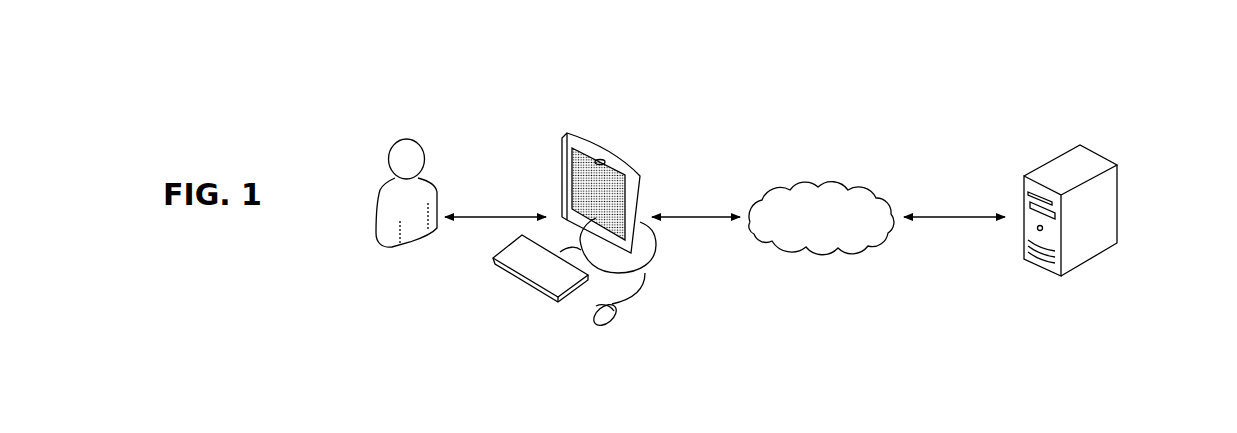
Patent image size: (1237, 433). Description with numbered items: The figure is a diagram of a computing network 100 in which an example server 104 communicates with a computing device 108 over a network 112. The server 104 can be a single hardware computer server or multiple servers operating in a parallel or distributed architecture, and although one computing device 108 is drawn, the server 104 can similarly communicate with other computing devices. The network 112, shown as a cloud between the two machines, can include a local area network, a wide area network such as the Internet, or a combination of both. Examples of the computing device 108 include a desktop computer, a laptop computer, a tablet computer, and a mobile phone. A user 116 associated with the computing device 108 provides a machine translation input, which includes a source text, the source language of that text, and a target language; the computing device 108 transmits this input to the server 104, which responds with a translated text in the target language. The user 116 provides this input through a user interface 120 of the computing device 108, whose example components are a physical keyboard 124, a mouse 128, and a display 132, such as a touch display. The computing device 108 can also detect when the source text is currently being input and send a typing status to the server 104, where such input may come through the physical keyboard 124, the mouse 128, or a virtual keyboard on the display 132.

The computing network 100 is at (956, 60).
The server 104 is at (1099, 158).
The computing device 108 is at (629, 189).
The network 112 is at (823, 188).
The user 116 is at (405, 140).
The user interface 120 is at (583, 235).
The physical keyboard 124 is at (517, 283).
The mouse 128 is at (607, 327).
The display 132 is at (626, 193).